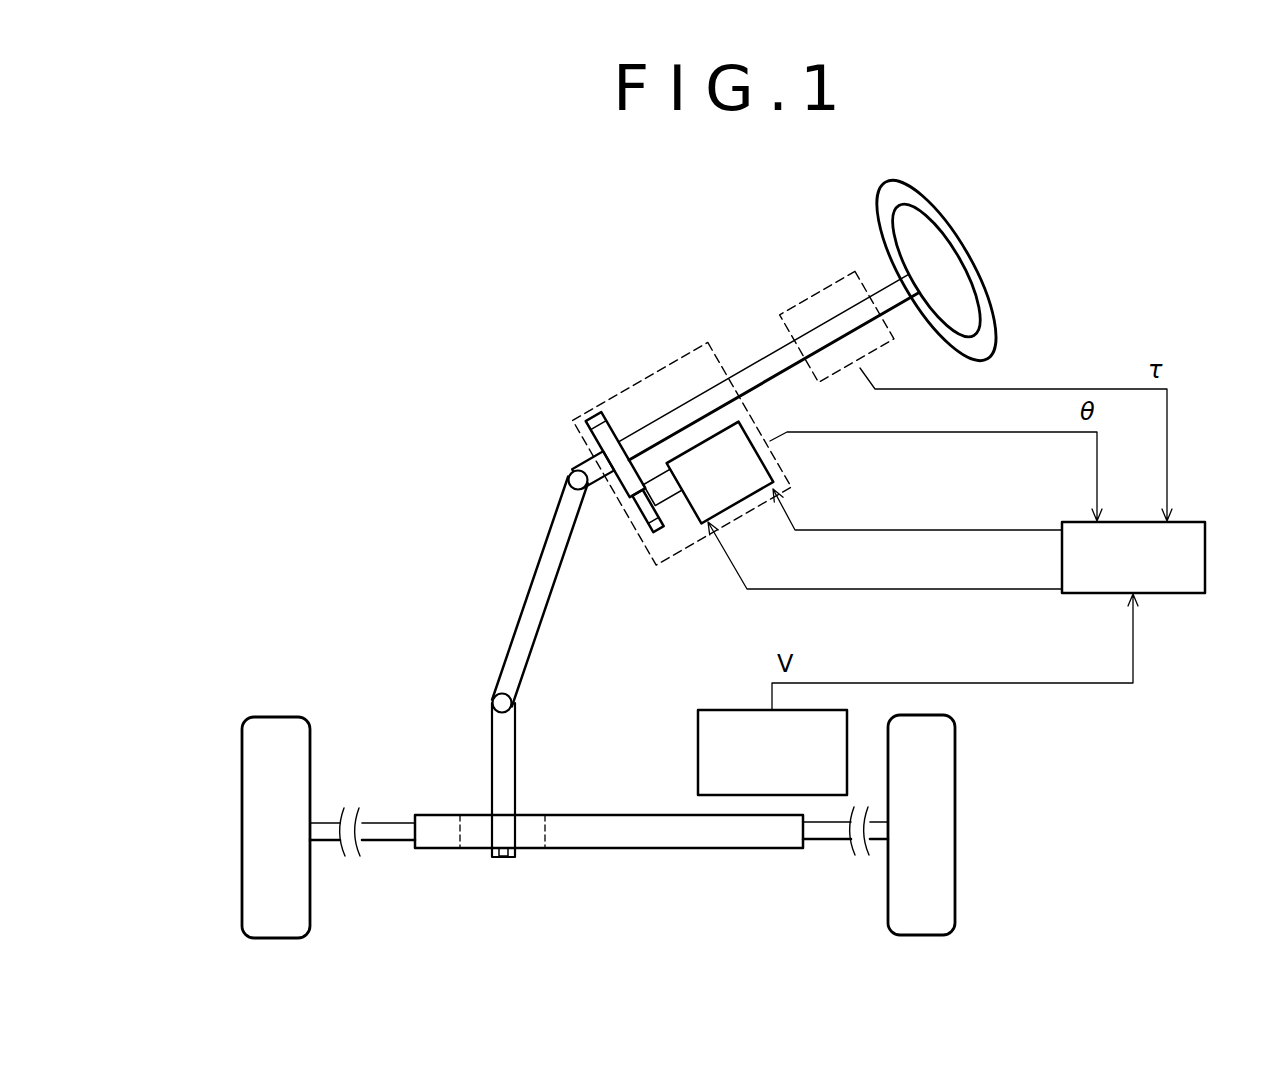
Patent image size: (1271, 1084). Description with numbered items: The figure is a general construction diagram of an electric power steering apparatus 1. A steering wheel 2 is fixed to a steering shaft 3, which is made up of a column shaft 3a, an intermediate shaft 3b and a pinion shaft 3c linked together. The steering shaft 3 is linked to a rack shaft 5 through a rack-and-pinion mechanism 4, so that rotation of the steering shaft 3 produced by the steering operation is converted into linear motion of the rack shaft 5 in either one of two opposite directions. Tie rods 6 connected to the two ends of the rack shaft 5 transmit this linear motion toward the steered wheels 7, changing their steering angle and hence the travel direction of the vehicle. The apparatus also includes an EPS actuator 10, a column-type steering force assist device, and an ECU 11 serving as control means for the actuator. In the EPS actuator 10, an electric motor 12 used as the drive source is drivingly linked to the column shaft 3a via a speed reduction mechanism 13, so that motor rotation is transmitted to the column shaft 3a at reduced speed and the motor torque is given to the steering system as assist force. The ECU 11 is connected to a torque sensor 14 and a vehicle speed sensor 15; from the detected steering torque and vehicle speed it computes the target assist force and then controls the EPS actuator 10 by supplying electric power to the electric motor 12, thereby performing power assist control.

The electric power steering apparatus 1 is at (1154, 232).
The steering wheel 2 is at (968, 256).
The steering shaft 3 is at (502, 441).
The column shaft 3a is at (572, 473).
The intermediate shaft 3b is at (533, 583).
The pinion shaft 3c is at (492, 716).
The rack-and-pinion mechanism 4 is at (528, 823).
The rack shaft 5 is at (610, 815).
The tie rods 6 is at (386, 833).
The steered wheels 7 is at (276, 717).
The EPS actuator 10 is at (648, 372).
The ECU 11 is at (1206, 551).
The electric motor 12 is at (701, 487).
The speed reduction mechanism 13 is at (632, 522).
The torque sensor 14 is at (822, 288).
The vehicle speed sensor 15 is at (720, 710).